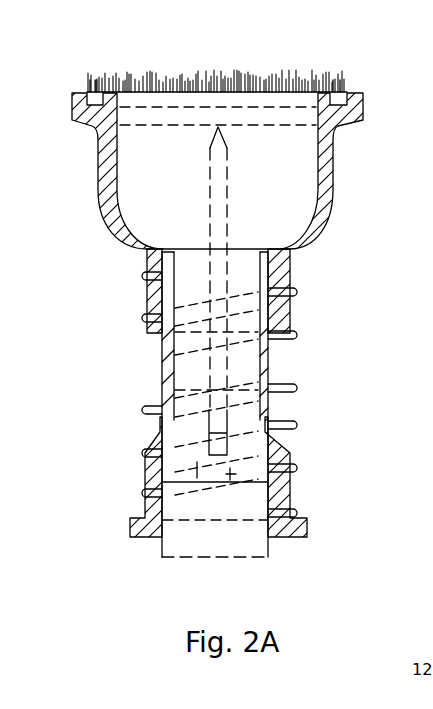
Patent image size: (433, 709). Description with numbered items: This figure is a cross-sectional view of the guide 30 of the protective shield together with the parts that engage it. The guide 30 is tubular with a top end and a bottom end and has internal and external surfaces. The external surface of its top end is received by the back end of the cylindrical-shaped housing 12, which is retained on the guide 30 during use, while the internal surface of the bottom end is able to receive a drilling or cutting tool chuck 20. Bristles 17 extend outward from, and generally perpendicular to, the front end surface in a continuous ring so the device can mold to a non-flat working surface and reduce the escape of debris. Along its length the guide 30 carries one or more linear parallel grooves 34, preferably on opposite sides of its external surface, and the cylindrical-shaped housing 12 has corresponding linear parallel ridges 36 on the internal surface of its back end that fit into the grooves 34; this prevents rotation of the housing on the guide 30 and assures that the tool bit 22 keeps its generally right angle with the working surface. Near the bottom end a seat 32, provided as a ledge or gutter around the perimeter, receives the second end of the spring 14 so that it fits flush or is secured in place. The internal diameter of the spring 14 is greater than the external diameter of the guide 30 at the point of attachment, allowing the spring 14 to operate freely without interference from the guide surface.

The cylindrical-shaped housing 12 is at (128, 241).
The spring 14 is at (292, 430).
The bristles 17 is at (103, 72).
The drilling or cutting tool chuck 20 is at (250, 500).
The tool bit 22 is at (227, 187).
The guide 30 is at (137, 192).
The seat 32 is at (143, 518).
The grooves 34 is at (162, 300).
The ridges 36 is at (160, 346).